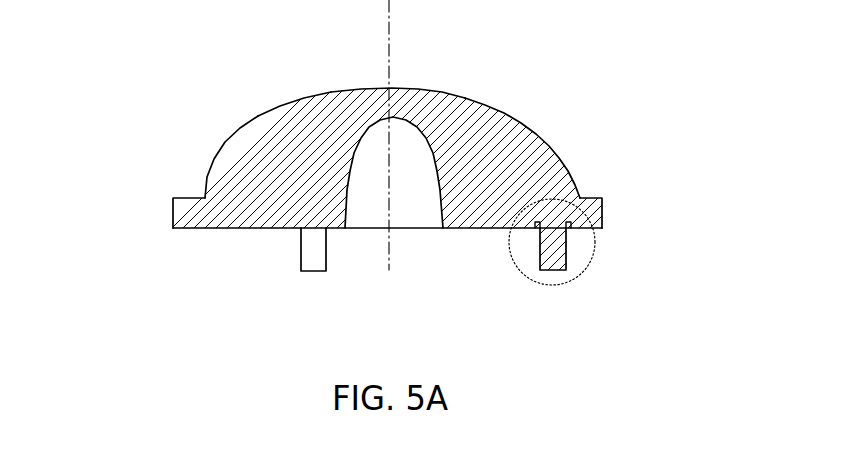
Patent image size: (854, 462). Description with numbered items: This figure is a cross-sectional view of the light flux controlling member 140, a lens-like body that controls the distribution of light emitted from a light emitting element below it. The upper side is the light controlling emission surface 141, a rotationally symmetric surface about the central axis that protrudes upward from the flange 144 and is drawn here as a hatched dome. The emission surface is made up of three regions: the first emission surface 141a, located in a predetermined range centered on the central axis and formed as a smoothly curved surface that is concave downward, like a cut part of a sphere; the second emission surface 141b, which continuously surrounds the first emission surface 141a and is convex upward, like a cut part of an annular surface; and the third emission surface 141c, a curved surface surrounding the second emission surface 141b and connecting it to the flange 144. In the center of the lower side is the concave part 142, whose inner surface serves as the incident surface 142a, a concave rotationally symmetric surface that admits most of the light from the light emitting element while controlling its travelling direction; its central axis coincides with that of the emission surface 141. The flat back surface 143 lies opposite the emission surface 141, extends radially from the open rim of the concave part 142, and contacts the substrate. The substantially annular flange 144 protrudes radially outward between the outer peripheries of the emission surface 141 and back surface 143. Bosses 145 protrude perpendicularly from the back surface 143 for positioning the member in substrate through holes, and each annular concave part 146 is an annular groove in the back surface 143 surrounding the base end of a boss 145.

The light flux controlling member 140 is at (552, 75).
The light controlling emission surface 141 is at (192, 0).
The first emission surface 141a is at (382, 90).
The second emission surface 141b is at (288, 102).
The third emission surface 141c is at (212, 172).
The concave part 142 is at (371, 229).
The incident surface 142a is at (433, 165).
The back surface 143 is at (257, 229).
The flange 144 is at (173, 197).
The boss 145 is at (313, 260).
The annular concave part 146 is at (534, 226).